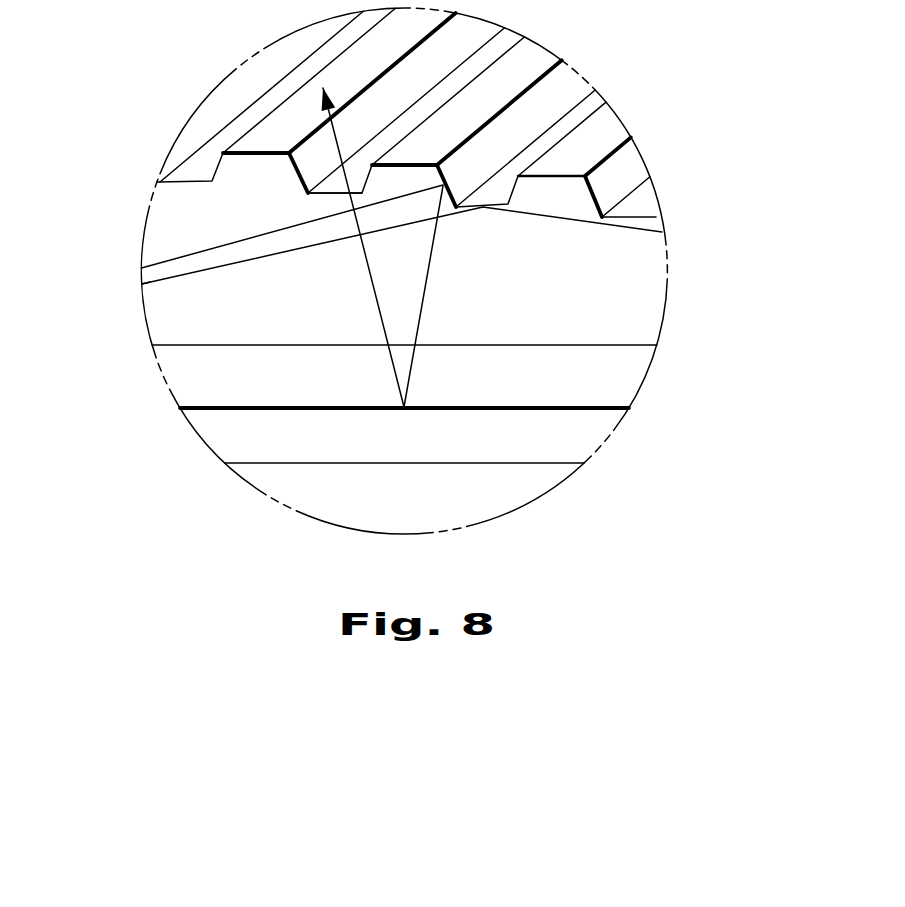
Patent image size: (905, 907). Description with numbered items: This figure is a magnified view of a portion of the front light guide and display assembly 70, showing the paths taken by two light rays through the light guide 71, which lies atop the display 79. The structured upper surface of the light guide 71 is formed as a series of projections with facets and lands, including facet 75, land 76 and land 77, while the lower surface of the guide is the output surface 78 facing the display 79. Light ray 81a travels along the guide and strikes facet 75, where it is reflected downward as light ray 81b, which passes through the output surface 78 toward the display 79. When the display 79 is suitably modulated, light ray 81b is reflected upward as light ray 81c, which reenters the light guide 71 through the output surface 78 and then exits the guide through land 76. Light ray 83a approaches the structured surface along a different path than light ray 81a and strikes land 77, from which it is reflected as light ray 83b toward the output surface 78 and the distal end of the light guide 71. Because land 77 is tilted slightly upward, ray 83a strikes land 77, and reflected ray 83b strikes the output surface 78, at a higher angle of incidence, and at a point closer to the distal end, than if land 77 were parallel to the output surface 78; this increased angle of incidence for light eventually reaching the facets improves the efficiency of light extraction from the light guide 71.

The front light guide and display assembly 70 is at (667, 43).
The light guide 71 is at (600, 303).
The facet 75 is at (573, 72).
The land 76 is at (329, 192).
The land 77 is at (583, 112).
The output surface 78 is at (582, 347).
The display 79 is at (518, 450).
The light ray 81a is at (197, 252).
The light ray 81b is at (423, 300).
The light ray 81c is at (377, 310).
The light ray 83a is at (177, 278).
The light ray 83b is at (618, 228).